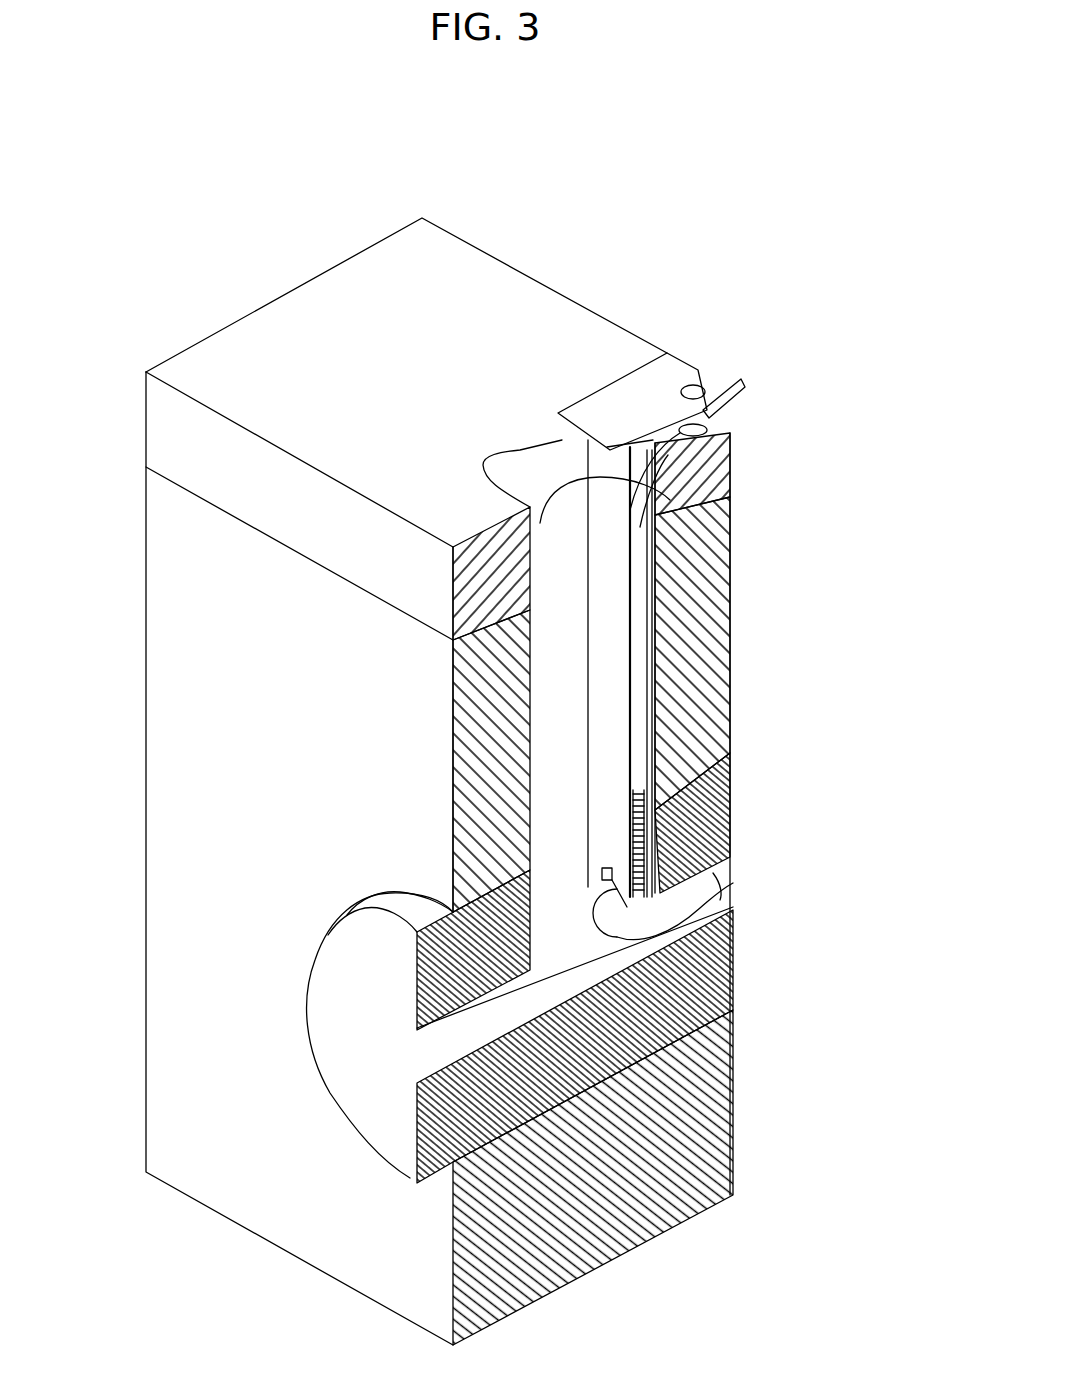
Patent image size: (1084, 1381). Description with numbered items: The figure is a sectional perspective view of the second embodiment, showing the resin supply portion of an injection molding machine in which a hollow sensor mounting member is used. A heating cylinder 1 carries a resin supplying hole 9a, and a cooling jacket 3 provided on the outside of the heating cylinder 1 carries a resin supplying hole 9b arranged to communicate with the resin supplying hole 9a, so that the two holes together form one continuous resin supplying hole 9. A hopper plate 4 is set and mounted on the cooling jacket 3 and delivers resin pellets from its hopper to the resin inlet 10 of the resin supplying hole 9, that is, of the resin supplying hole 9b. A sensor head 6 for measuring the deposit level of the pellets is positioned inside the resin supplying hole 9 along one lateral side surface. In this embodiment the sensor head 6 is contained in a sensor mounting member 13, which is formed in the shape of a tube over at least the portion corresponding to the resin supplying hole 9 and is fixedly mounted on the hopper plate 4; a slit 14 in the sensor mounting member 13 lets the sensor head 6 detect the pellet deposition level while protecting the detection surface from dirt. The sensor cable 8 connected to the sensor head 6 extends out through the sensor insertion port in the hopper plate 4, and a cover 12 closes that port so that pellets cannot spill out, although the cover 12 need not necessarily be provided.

The heating cylinder 1 is at (333, 1066).
The cooling jacket 3 is at (517, 1278).
The hopper plate 4 is at (463, 252).
The sensor head 6 is at (660, 792).
The sensor cable 8 is at (743, 383).
The resin supplying hole 9 is at (699, 672).
The resin supplying hole 9a is at (520, 817).
The resin supplying hole 9b is at (570, 703).
The resin inlet 10 is at (650, 530).
The cover 12 is at (668, 378).
The sensor mounting member 13 is at (610, 630).
The slit 14 is at (733, 883).